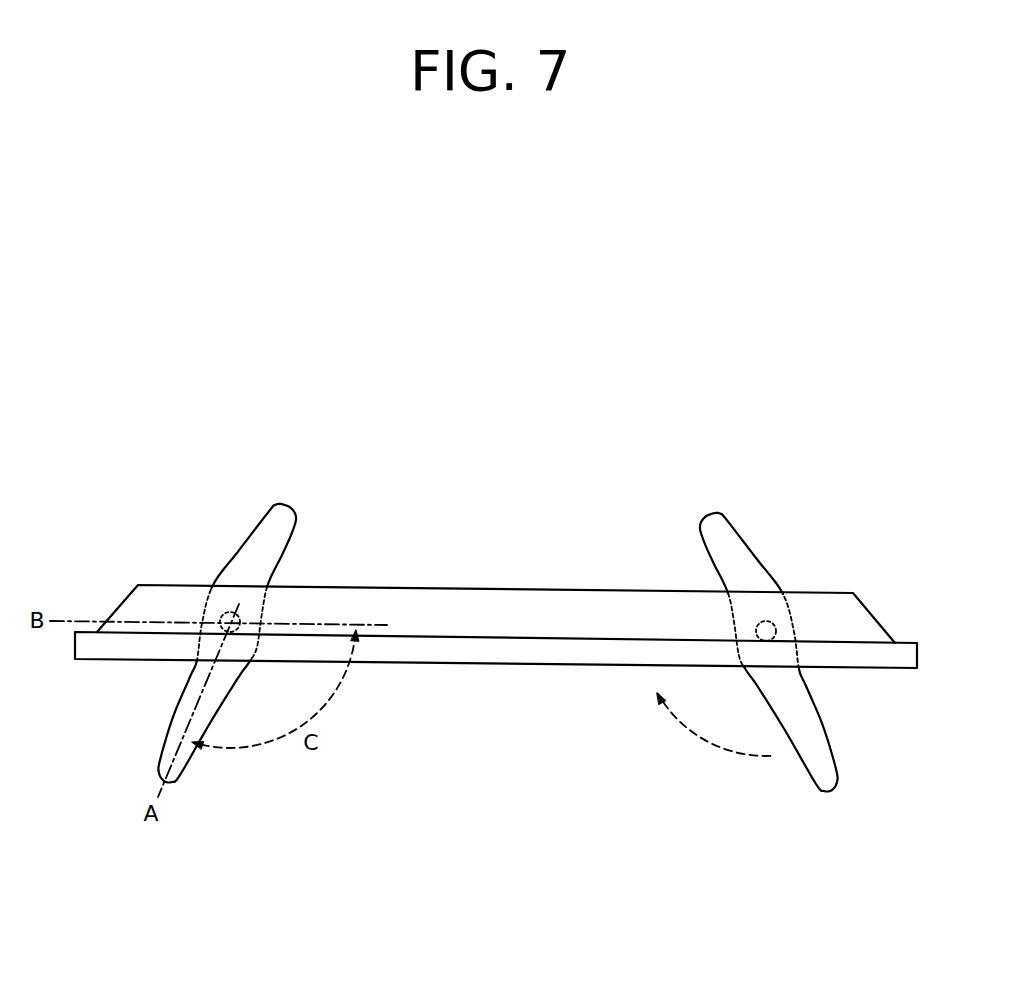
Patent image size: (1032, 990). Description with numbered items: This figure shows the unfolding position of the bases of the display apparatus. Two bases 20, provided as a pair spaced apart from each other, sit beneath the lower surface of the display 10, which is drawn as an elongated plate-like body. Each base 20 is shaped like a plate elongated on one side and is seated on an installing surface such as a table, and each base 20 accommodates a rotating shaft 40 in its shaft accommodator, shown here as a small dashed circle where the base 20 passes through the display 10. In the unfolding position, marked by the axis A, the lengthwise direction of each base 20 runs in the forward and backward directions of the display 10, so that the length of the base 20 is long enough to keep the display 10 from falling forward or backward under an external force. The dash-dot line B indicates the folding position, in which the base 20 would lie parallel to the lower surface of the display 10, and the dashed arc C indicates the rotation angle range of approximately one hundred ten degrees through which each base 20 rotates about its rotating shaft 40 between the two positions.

The display 10 is at (500, 663).
The base 20 is at (283, 503).
The rotating shaft 40 is at (222, 616).